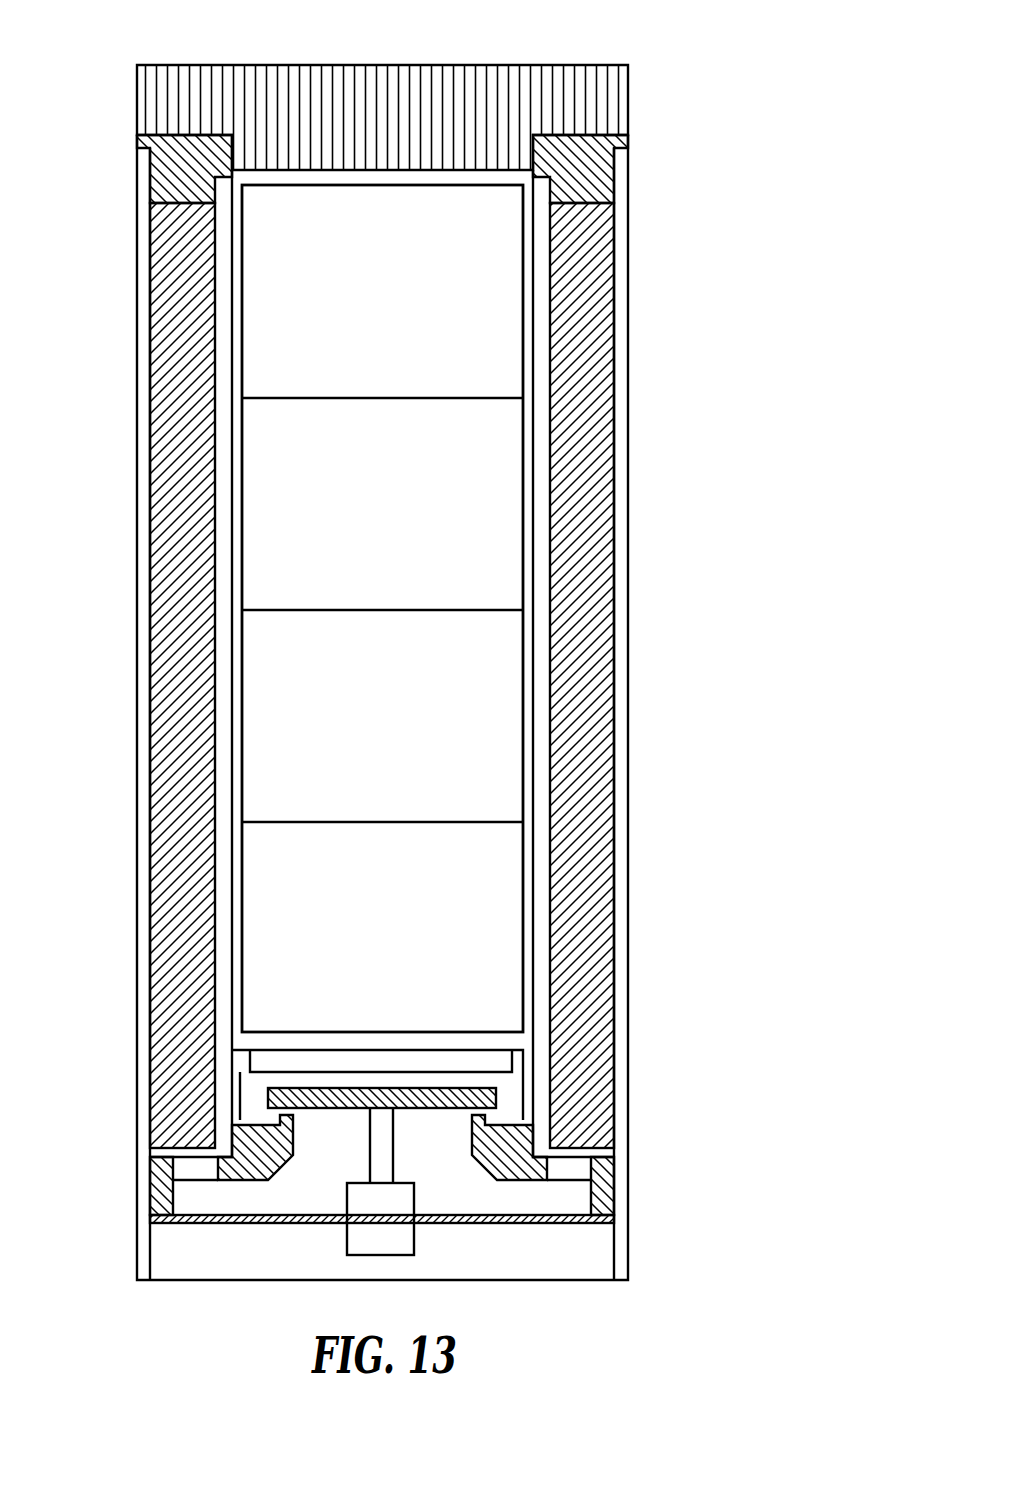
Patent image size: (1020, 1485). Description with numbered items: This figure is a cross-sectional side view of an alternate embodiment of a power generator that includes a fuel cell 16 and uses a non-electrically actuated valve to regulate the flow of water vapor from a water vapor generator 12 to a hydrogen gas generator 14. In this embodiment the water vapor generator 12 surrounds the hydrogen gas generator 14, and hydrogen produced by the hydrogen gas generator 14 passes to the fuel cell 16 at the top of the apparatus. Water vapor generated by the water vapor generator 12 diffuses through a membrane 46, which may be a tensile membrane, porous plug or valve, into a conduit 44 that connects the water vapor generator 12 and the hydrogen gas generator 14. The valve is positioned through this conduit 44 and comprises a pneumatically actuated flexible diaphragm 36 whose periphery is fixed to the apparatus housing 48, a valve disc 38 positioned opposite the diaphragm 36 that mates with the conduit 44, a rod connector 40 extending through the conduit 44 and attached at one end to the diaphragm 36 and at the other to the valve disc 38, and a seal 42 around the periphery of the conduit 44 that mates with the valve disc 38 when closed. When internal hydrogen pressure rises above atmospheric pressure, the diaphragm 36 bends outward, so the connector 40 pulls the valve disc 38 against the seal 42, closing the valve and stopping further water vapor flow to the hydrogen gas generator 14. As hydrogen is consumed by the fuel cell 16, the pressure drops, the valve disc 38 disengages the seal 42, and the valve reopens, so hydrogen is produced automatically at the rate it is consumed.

The water vapor generator 12 is at (175, 622).
The hydrogen gas generator 14 is at (502, 730).
The fuel cell 16 is at (530, 90).
The flexible diaphragm 36 is at (517, 1218).
The valve disc 38 is at (497, 1087).
The rod connector 40 is at (388, 1132).
The seal 42 is at (518, 1143).
The conduit 44 is at (330, 1178).
The membrane 46 is at (165, 1158).
The apparatus housing 48 is at (620, 1247).